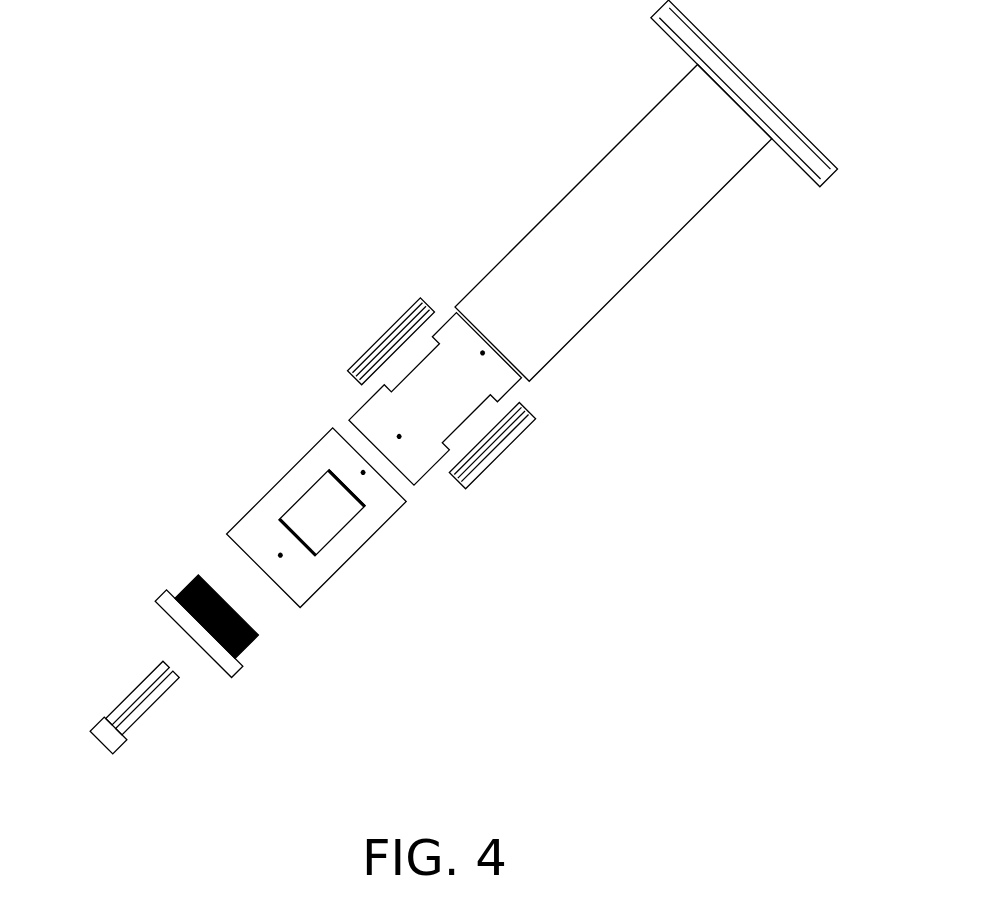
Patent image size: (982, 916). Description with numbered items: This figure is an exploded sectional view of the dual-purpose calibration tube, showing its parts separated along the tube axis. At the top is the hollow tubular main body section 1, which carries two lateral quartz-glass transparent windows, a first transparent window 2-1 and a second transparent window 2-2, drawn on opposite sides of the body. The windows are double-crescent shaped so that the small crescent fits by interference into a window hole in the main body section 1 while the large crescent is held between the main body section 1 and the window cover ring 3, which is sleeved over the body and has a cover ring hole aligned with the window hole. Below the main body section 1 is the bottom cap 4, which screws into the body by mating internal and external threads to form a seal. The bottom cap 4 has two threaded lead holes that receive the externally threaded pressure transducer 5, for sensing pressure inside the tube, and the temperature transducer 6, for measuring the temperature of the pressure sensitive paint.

The main body section 1 is at (528, 337).
The first transparent window 2-1 is at (392, 340).
The second transparent window 2-2 is at (497, 447).
The window cover ring 3 is at (302, 485).
The bottom cap 4 is at (180, 593).
The pressure transducer 5 is at (110, 727).
The temperature transducer 6 is at (125, 740).